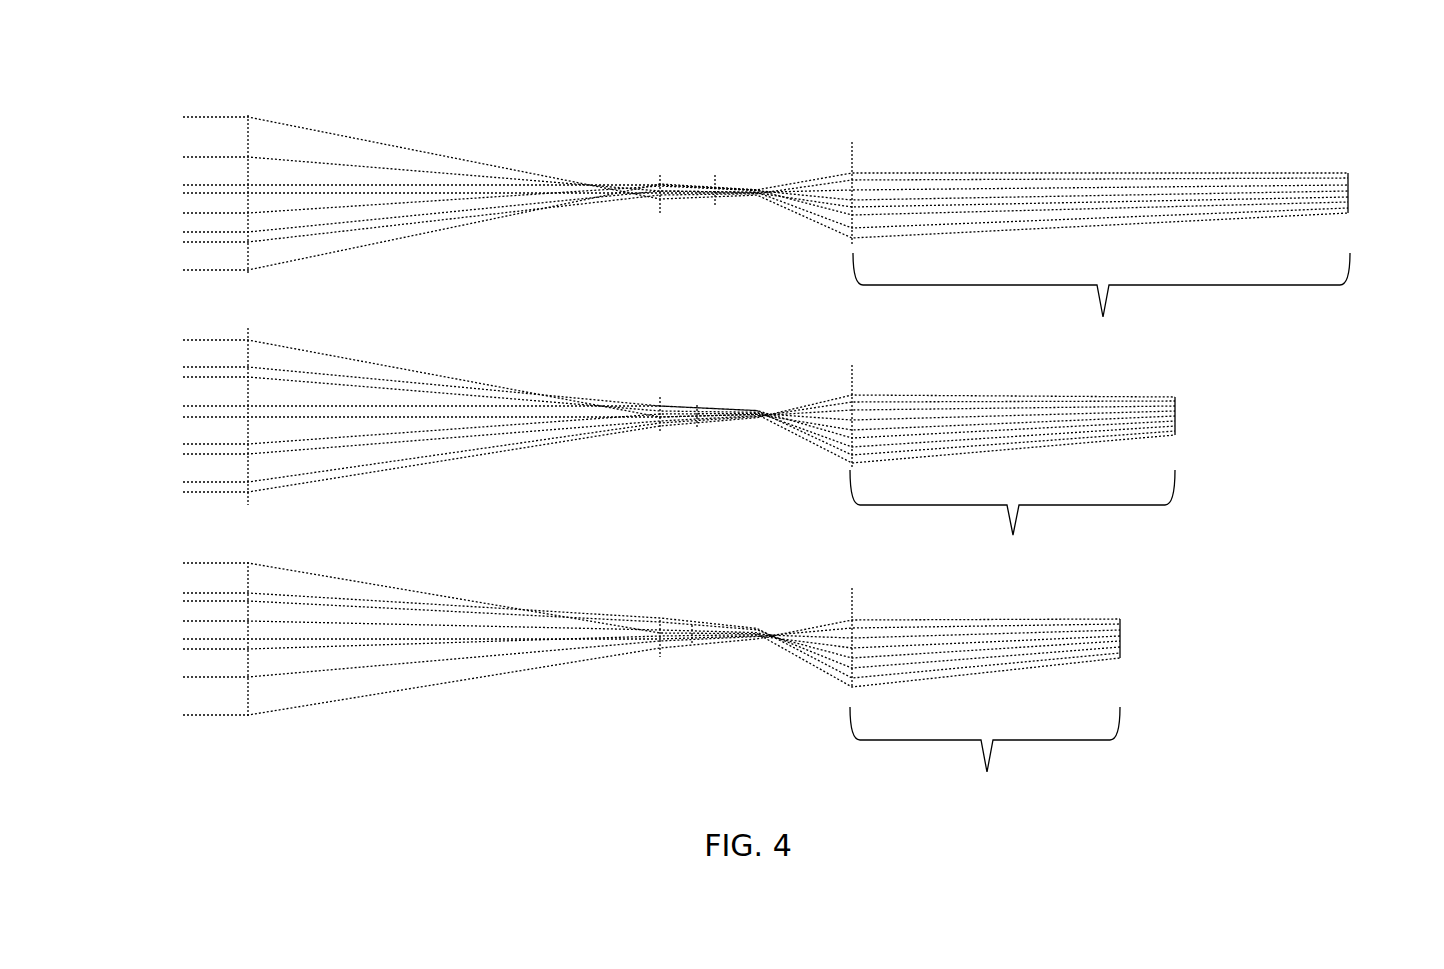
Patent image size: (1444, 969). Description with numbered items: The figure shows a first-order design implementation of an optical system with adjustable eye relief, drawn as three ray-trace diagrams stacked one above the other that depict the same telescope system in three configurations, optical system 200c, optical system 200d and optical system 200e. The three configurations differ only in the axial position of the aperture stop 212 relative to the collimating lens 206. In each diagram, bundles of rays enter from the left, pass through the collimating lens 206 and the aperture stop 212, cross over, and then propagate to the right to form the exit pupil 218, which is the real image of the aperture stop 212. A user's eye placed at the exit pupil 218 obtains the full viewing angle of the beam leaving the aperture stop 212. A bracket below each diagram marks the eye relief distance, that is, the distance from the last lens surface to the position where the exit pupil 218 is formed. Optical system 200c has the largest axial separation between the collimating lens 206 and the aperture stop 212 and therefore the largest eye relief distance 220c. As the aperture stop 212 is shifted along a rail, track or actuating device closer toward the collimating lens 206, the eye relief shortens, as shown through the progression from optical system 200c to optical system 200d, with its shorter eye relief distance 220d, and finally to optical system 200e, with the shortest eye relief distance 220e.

The optical system 200c is at (96, 135).
The optical system 200d is at (100, 428).
The optical system 200e is at (102, 642).
The collimating lens 206 is at (660, 175).
The aperture stop 212 is at (715, 178).
The exit pupil 218 is at (1349, 194).
The eye relief distance 220c is at (1101, 302).
The eye relief distance 220d is at (1012, 520).
The eye relief distance 220e is at (985, 758).